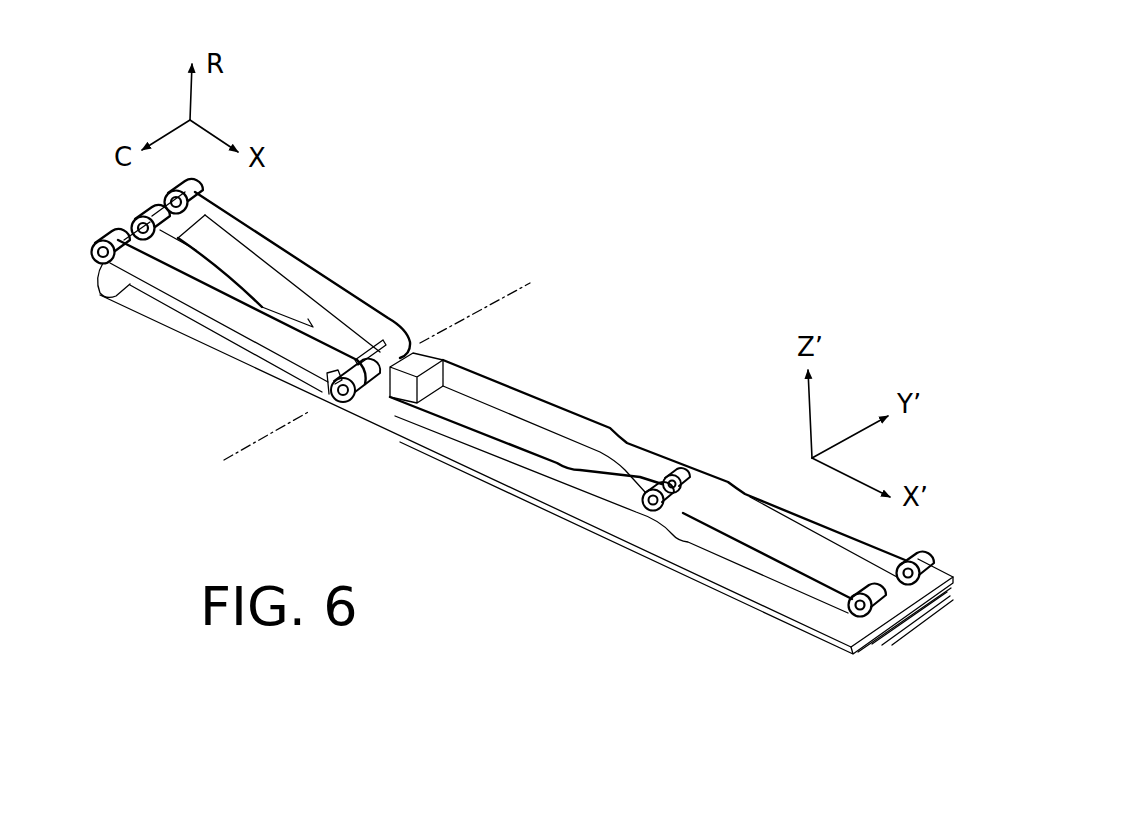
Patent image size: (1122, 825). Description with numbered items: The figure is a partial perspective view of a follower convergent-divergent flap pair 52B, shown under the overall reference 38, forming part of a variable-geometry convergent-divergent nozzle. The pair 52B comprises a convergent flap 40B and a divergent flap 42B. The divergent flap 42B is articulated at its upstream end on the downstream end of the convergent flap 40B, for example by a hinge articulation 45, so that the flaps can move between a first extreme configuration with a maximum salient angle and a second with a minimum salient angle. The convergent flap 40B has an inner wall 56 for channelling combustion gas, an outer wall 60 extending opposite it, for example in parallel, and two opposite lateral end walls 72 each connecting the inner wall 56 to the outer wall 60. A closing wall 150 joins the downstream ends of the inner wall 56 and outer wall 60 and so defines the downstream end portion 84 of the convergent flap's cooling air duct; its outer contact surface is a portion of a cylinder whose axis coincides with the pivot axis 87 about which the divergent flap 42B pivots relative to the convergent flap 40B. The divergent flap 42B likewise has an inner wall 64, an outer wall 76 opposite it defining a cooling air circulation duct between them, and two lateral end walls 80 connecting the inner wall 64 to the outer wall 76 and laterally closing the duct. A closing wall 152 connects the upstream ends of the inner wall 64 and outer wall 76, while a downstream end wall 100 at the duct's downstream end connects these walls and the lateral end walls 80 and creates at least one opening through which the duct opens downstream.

The hinge assembly 38 is at (585, 152).
The follower convergent-divergent flap pair 52B is at (636, 197).
The convergent flap 40B is at (376, 302).
The divergent flap 42B is at (560, 400).
The hinge articulation 45 is at (428, 352).
The inner wall 56 is at (162, 312).
The outer wall 60 is at (324, 330).
The inner wall 64 is at (590, 533).
The lateral end walls 72 is at (262, 366).
The outer wall 76 is at (634, 523).
The lateral end walls 80 is at (727, 590).
The downstream end portion 84 is at (307, 413).
The pivot axis 87 is at (225, 462).
The downstream end wall 100 is at (905, 612).
The closing wall 150 is at (322, 394).
The closing wall 152 is at (356, 357).